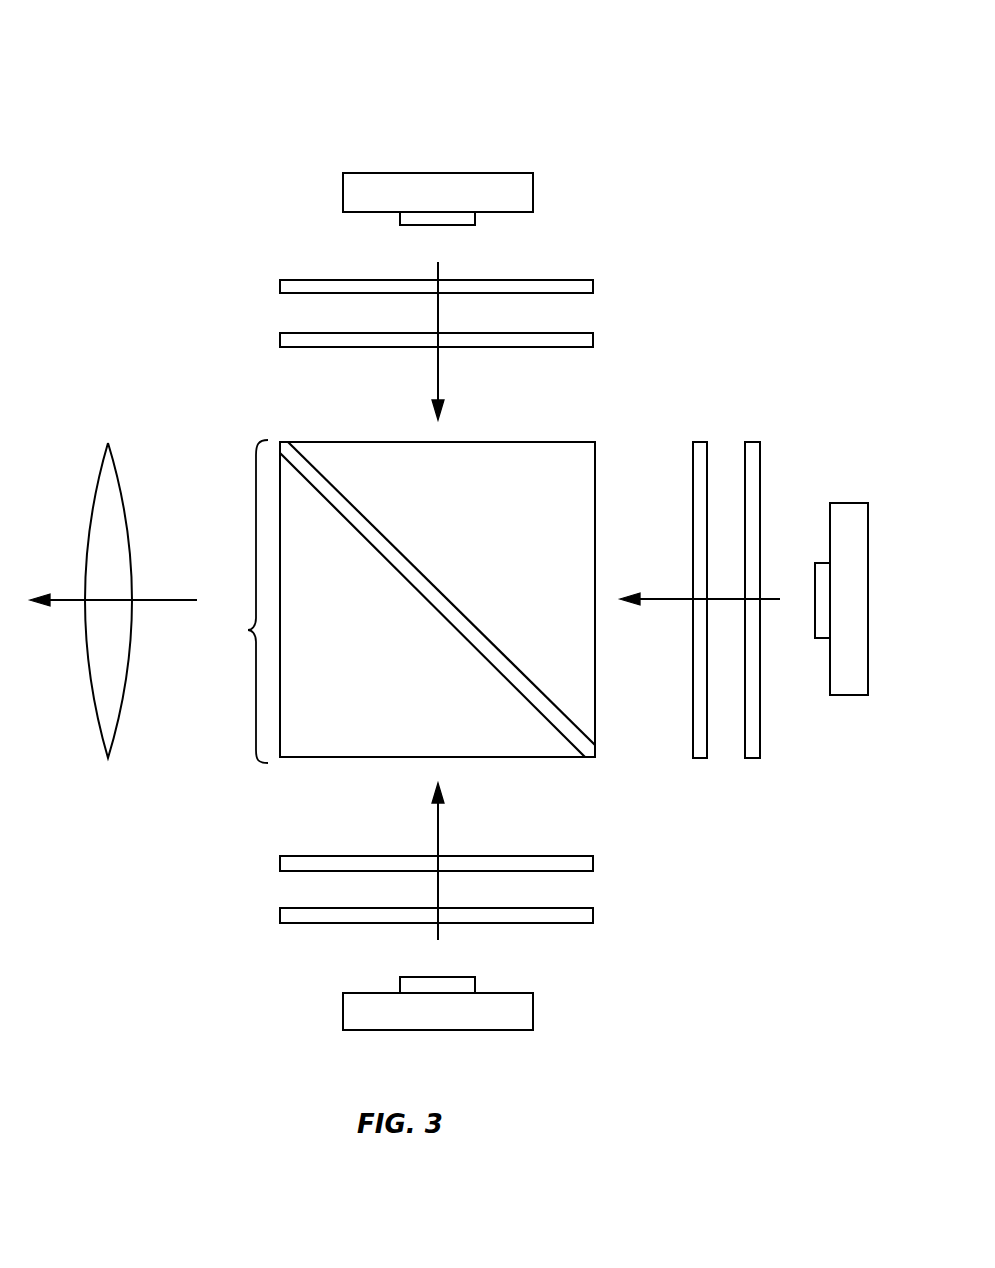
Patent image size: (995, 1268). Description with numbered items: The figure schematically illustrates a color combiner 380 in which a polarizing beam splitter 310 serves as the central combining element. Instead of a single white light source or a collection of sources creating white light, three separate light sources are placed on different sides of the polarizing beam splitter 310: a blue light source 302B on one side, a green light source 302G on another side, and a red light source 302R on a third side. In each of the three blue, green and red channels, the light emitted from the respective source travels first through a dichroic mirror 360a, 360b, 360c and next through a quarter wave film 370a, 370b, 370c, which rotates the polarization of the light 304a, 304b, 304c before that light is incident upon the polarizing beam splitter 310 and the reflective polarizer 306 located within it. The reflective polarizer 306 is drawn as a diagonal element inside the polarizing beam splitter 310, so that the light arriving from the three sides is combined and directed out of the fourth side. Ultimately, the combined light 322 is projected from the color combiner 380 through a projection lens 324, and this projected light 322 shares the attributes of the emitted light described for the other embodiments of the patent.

The color combiner 380 is at (203, 50).
The blue light source 302B is at (515, 192).
The green light source 302G is at (850, 523).
The red light source 302R is at (507, 1015).
The light 304a is at (440, 387).
The light 304b is at (653, 597).
The light 304c is at (440, 820).
The reflective polarizer 306 is at (592, 748).
The polarizing beam splitter 310 is at (396, 601).
The light 322 is at (63, 598).
The projection lens 324 is at (100, 485).
The dichroic mirror 360a is at (593, 289).
The dichroic mirror 360b is at (752, 447).
The dichroic mirror 360c is at (593, 915).
The quarter wave film 370a is at (593, 343).
The quarter wave film 370b is at (700, 447).
The quarter wave film 370c is at (593, 863).